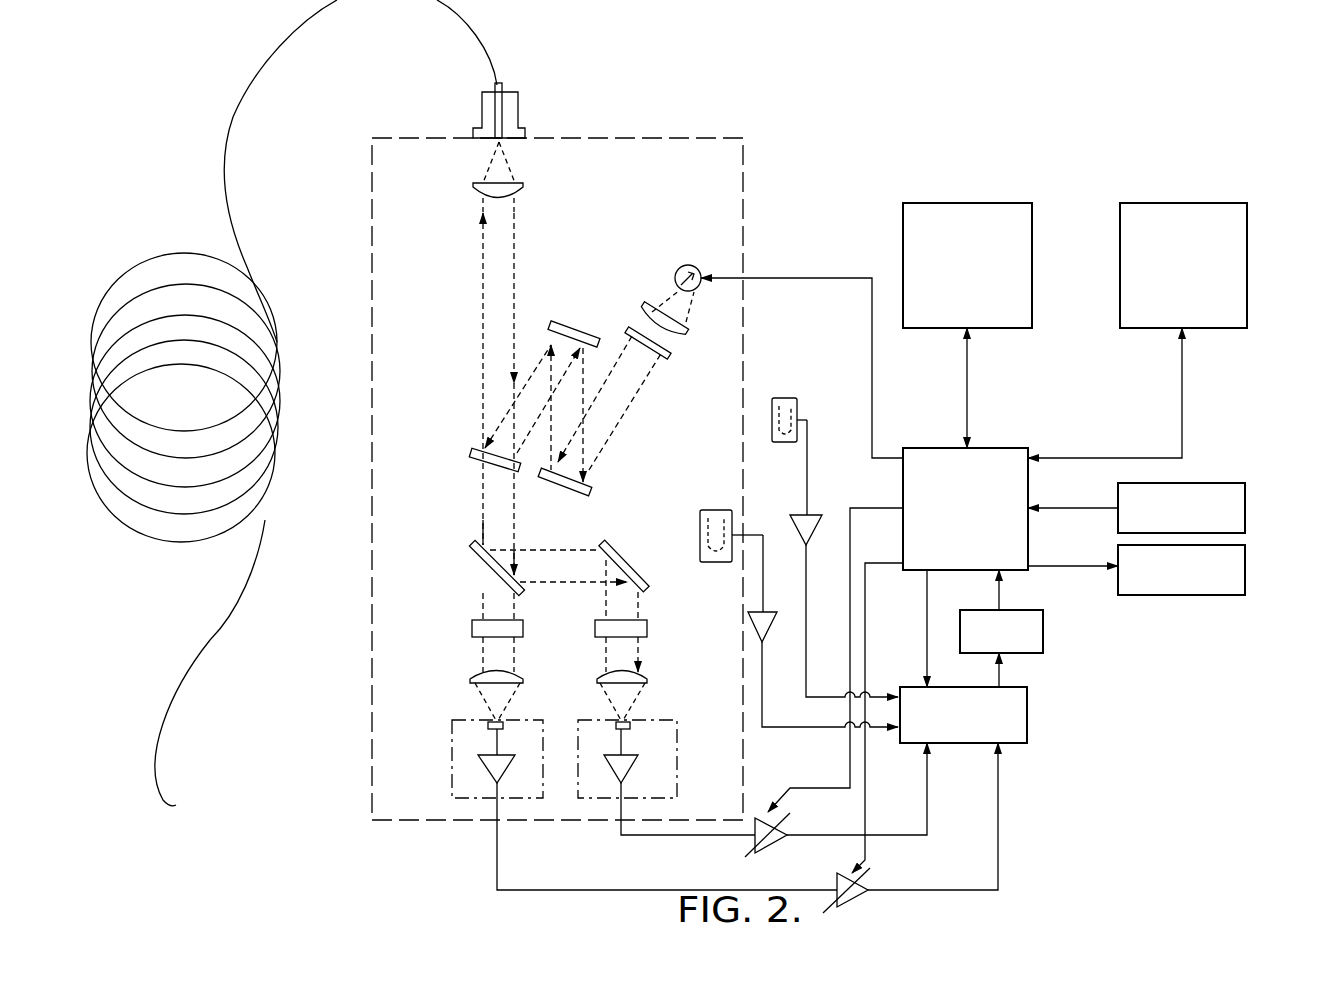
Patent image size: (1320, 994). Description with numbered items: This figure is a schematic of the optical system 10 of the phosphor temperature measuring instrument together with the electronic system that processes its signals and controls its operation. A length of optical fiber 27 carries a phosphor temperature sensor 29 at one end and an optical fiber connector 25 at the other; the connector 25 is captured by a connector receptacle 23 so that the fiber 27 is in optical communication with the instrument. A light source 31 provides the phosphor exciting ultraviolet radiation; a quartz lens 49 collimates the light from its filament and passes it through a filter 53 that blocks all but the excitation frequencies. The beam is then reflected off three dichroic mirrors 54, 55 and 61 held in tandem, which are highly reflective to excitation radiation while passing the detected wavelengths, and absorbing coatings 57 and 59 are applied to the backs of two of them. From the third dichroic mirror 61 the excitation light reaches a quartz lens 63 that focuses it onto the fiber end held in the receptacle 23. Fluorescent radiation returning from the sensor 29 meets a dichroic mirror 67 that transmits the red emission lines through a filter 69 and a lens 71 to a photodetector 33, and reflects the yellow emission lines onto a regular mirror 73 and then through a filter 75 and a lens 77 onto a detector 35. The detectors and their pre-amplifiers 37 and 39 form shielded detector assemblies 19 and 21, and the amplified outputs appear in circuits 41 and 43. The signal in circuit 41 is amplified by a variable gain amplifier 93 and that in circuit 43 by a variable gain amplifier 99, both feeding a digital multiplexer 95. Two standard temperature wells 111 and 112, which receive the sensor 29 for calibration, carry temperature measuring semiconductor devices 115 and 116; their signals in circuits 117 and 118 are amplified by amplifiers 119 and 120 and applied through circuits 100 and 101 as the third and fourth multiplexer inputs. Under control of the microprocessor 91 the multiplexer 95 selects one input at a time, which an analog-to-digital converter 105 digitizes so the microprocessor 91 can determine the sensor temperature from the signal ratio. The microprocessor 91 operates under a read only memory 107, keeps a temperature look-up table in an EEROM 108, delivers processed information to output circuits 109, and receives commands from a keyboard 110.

The optical system 10 is at (653, 248).
The detector assembly 19 is at (452, 763).
The detector assembly 21 is at (677, 764).
The optical fiber connector receptacle 23 is at (512, 103).
The optical fiber connector 25 is at (503, 88).
The optical fiber 27 is at (225, 182).
The phosphor temperature sensor 29 is at (178, 805).
The light source 31 is at (697, 268).
The photodetector 33 is at (503, 722).
The detector 35 is at (630, 722).
The pre-amplifier 37 is at (500, 758).
The pre-amplifier 39 is at (627, 758).
The circuit 41 is at (660, 890).
The circuit 43 is at (662, 836).
The quartz lens 49 is at (688, 330).
The filter 53 is at (672, 353).
The dichroic mirror 54 is at (586, 489).
The dichroic mirror 55 is at (580, 318).
The absorbing coating 57 is at (580, 493).
The absorbing coating 59 is at (583, 327).
The dichroic mirror 61 is at (470, 458).
The quartz lens 63 is at (473, 197).
The dichroic mirror 67 is at (470, 551).
The filter 69 is at (523, 630).
The lens 71 is at (520, 676).
The regular mirror 73 is at (645, 569).
The filter 75 is at (647, 630).
The lens 77 is at (648, 676).
The microprocessor 91 is at (1000, 448).
The variable gain amplifier 93 is at (870, 886).
The digital multiplexer 95 is at (1027, 703).
The variable gain amplifier 99 is at (788, 831).
The circuit 100 is at (775, 730).
The circuit 101 is at (808, 576).
The analog-to-digital converter 105 is at (1038, 611).
The read only memory 107 is at (1018, 203).
The electrically erasable read-only memory 108 is at (1233, 203).
The output circuits 109 is at (1245, 573).
The keyboard 110 is at (1245, 511).
The standard temperature well 111 is at (700, 523).
The standard temperature well 112 is at (773, 398).
The semiconductor device 115 is at (728, 510).
The temperature measuring semiconductor element 116 is at (797, 411).
The circuit 117 is at (748, 535).
The circuit 118 is at (808, 466).
The amplifier 119 is at (767, 628).
The amplifier 120 is at (816, 512).